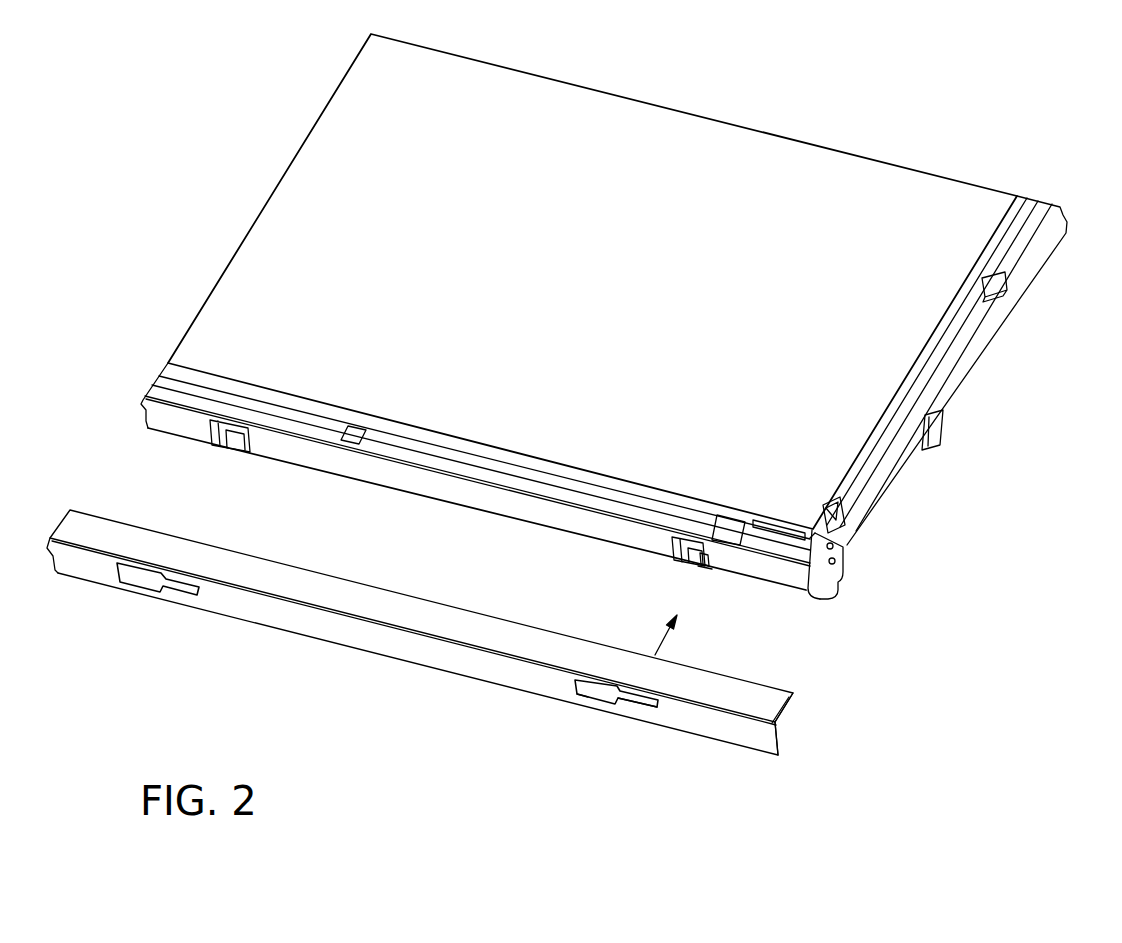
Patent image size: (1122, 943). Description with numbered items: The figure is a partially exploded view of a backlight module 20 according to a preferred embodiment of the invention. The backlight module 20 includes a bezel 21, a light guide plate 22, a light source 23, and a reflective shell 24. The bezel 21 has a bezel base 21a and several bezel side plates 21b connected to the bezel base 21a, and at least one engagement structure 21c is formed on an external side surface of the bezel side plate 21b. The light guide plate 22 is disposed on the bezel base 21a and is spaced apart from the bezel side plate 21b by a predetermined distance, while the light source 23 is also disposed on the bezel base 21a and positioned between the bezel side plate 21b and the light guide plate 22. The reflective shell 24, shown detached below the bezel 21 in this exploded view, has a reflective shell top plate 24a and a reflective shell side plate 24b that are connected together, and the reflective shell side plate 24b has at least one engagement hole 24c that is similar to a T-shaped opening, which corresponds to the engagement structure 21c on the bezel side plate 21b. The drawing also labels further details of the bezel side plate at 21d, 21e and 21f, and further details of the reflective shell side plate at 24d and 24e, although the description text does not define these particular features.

The backlight module 20 is at (1066, 127).
The bezel 21 is at (623, 372).
The bezel base 21a is at (840, 583).
The bezel side plate 21b is at (973, 367).
The engagement structure 21c is at (702, 566).
The latch 21d is at (677, 537).
The engaging portion 21e is at (705, 568).
The protrusion 21f is at (705, 541).
The light guide plate 22 is at (742, 150).
The light source 23 is at (722, 532).
The reflective shell 24 is at (455, 669).
The reflective shell top plate 24a is at (788, 710).
The reflective shell side plate 24b is at (708, 722).
The engagement hole 24c is at (607, 712).
The opening 24d is at (588, 692).
The hook portion 24e is at (642, 710).